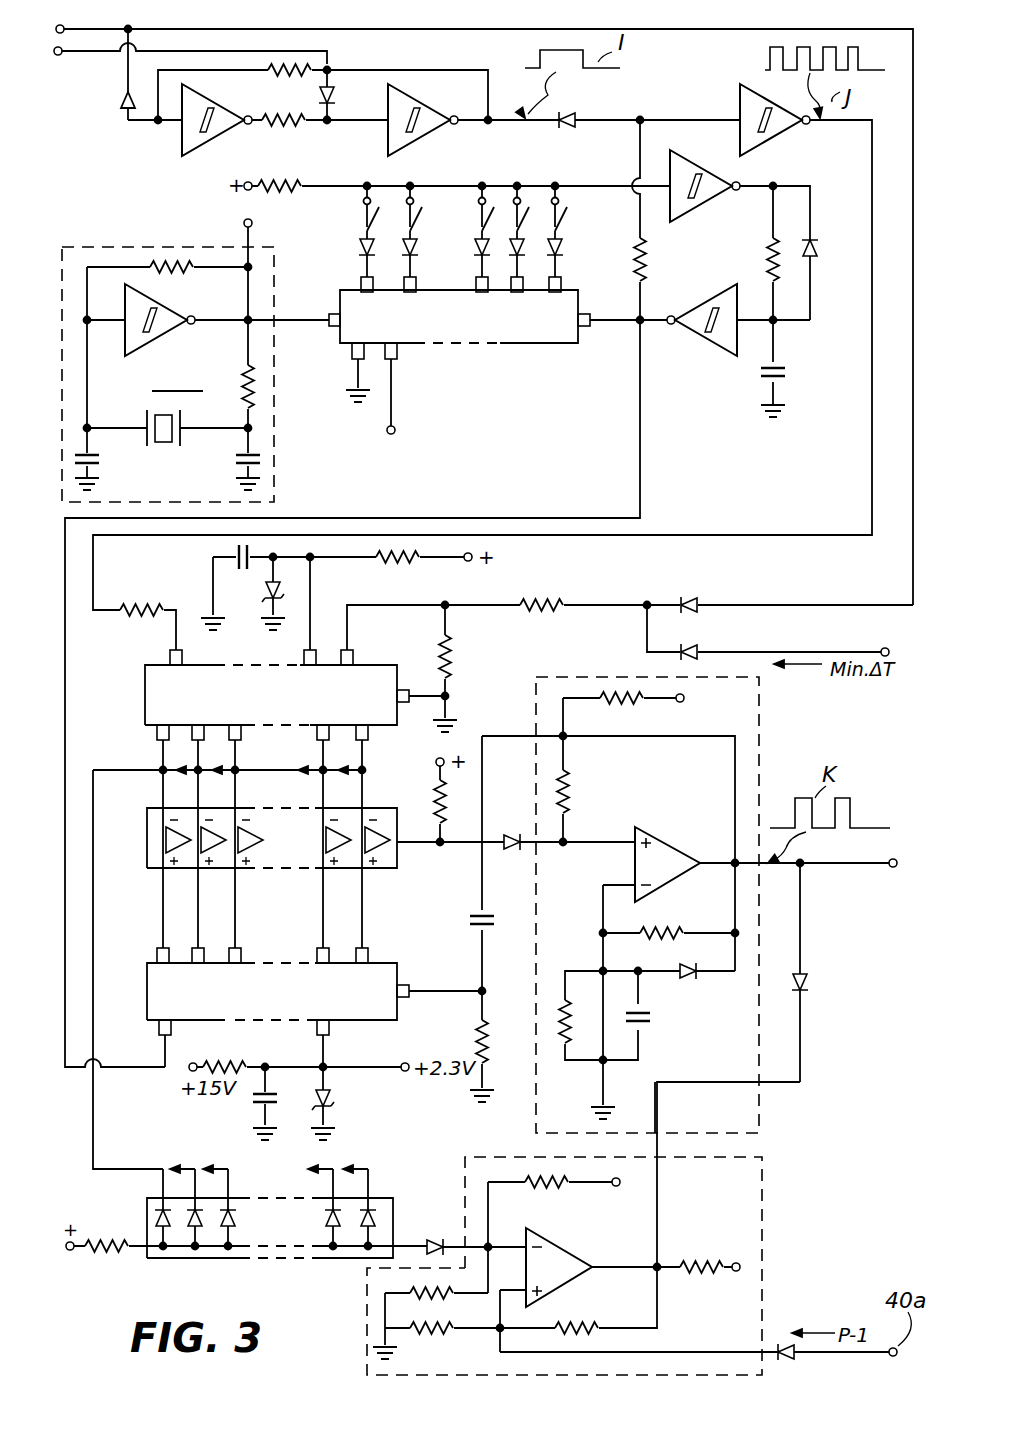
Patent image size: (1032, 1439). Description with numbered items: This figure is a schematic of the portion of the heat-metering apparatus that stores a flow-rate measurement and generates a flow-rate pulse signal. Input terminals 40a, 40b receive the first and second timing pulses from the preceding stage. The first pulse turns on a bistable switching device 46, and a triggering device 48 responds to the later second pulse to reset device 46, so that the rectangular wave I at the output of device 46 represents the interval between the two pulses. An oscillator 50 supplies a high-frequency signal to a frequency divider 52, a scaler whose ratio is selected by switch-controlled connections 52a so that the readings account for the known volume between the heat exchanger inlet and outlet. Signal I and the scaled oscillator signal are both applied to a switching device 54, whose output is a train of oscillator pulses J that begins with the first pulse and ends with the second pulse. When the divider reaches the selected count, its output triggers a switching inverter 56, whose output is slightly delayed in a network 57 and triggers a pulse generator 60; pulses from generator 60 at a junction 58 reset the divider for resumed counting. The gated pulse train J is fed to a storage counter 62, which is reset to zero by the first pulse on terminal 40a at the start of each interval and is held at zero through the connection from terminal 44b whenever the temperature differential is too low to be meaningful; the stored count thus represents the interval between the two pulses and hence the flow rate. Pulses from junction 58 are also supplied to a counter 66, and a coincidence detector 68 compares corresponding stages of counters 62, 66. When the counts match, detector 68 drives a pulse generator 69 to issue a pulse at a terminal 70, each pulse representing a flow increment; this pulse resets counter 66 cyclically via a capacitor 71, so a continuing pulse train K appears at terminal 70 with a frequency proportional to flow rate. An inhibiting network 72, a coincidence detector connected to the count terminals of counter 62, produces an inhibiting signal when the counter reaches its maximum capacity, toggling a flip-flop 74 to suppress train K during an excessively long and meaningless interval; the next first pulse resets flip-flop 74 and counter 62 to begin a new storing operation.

The input terminal 40a is at (62, 27).
The input terminal 40b is at (72, 86).
The terminal of switching device 44 44b is at (888, 648).
The bistable switching device 46 is at (414, 102).
The triggering device 48 is at (208, 102).
The oscillator 50 is at (172, 306).
The frequency divider 52 is at (547, 347).
The switch-controlled connections 52a is at (354, 222).
The switching device 54 is at (742, 98).
The switching inverter 56 is at (696, 220).
The network 57 is at (826, 236).
The junction 58 is at (640, 318).
The pulse generator 60 is at (712, 352).
The storage counter 62 is at (145, 696).
The counter 66 is at (147, 992).
The coincidence detector 68 is at (147, 818).
The pulse generator 69 is at (694, 852).
The terminal 70 is at (896, 868).
The capacitor 71 is at (470, 920).
The inhibiting network 72 is at (394, 1200).
The flip-flop 74 is at (764, 1246).